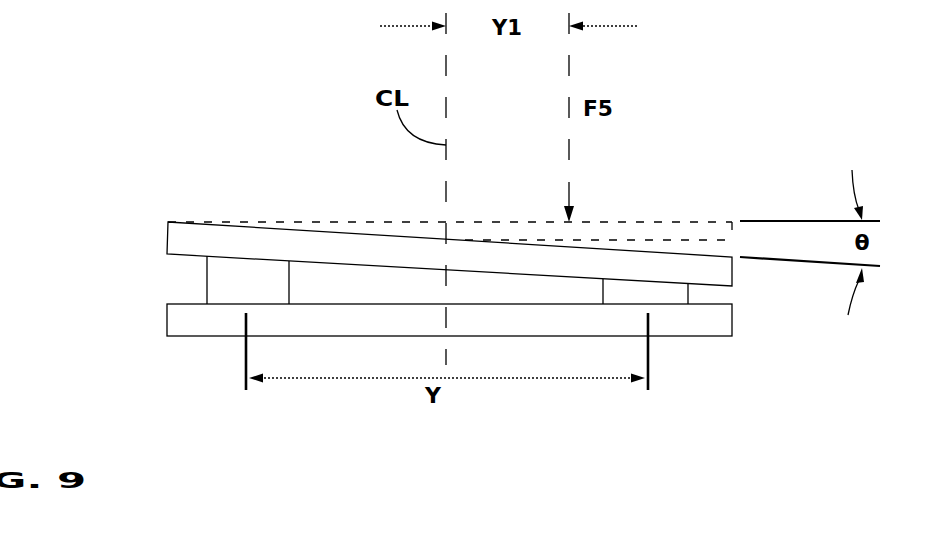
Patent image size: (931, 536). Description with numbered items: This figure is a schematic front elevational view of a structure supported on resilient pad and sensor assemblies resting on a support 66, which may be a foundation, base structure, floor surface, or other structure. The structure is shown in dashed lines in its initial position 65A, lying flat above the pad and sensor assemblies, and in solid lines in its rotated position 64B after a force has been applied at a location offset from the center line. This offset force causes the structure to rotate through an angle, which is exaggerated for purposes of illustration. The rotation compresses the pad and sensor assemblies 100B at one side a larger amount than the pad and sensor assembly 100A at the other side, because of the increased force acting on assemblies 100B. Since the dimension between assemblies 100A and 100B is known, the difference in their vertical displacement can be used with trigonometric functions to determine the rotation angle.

The tilted upper plate 64B is at (734, 271).
The initial position 65A is at (656, 222).
The support 66 is at (733, 328).
The pad and sensor assembly 100A is at (203, 275).
The pad and sensor assemblies 100B is at (695, 293).